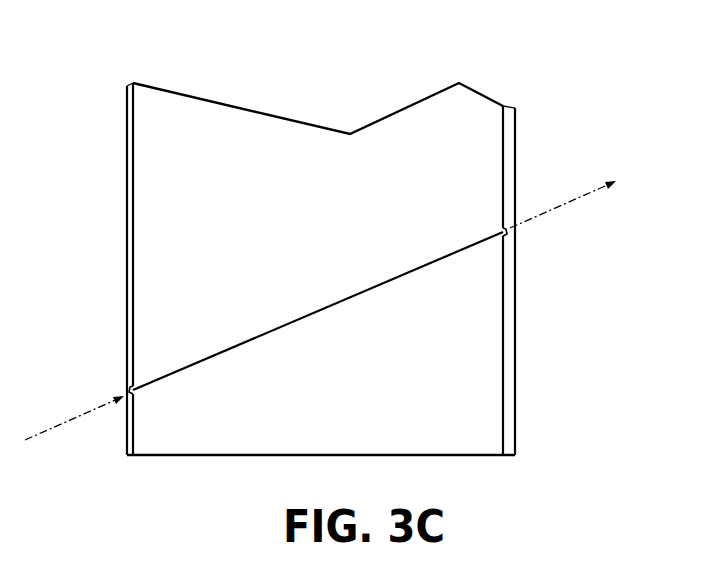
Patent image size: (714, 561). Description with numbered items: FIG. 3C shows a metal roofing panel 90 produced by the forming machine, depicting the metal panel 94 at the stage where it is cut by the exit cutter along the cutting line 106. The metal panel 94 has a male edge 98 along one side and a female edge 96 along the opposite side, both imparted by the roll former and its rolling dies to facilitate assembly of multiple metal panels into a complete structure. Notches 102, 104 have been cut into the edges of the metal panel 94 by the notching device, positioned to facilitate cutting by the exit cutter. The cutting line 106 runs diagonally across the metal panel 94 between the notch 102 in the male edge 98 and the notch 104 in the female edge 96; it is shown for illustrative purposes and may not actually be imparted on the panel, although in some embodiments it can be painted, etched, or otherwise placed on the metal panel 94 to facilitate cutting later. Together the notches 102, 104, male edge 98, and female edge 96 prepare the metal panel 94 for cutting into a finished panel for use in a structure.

The blank 90 is at (320, 233).
The metal panel 94 is at (311, 207).
The female edge 96 is at (508, 160).
The male edge 98 is at (128, 220).
The notch 102 is at (125, 392).
The notch 104 is at (510, 235).
The cutting line 106 is at (322, 307).